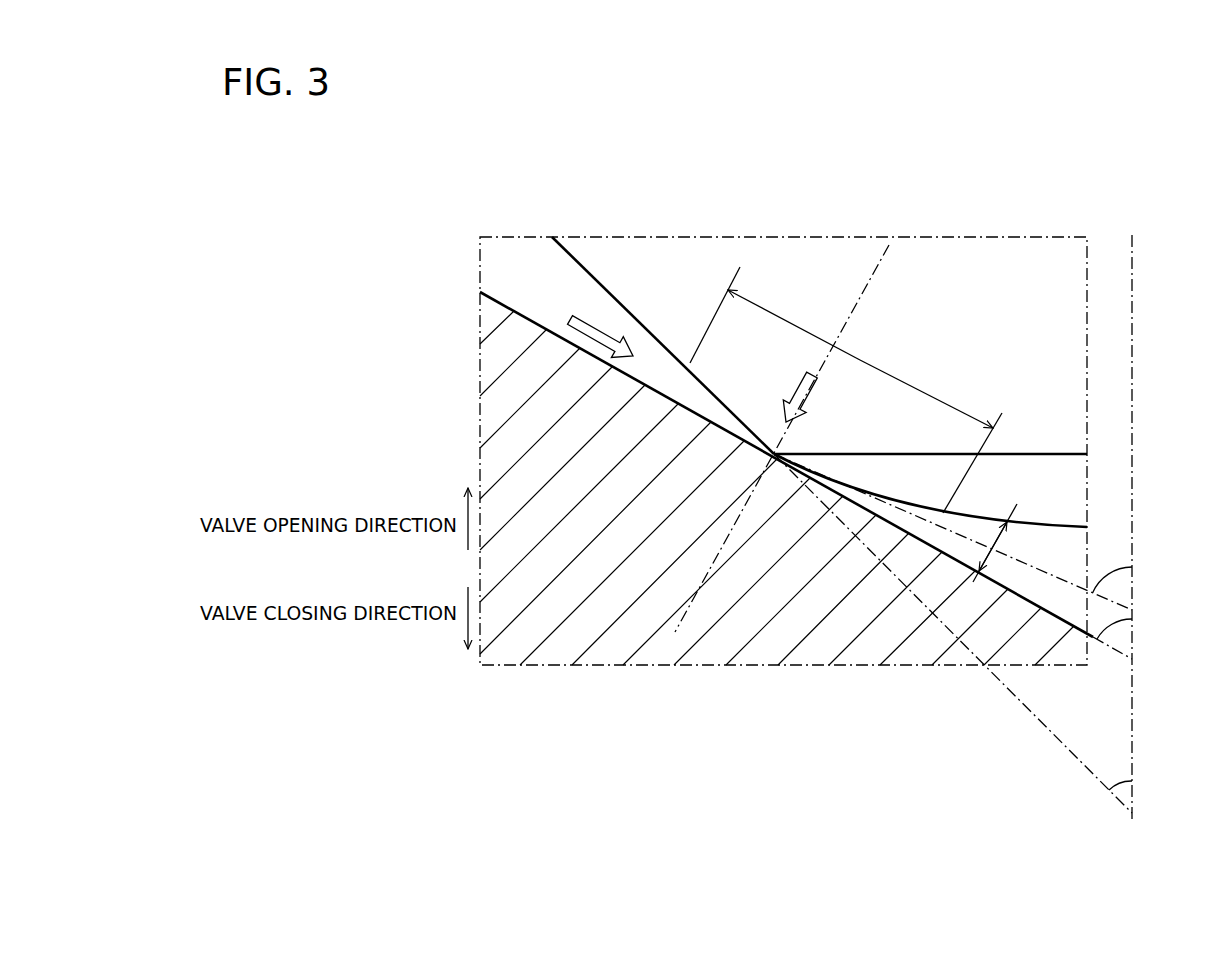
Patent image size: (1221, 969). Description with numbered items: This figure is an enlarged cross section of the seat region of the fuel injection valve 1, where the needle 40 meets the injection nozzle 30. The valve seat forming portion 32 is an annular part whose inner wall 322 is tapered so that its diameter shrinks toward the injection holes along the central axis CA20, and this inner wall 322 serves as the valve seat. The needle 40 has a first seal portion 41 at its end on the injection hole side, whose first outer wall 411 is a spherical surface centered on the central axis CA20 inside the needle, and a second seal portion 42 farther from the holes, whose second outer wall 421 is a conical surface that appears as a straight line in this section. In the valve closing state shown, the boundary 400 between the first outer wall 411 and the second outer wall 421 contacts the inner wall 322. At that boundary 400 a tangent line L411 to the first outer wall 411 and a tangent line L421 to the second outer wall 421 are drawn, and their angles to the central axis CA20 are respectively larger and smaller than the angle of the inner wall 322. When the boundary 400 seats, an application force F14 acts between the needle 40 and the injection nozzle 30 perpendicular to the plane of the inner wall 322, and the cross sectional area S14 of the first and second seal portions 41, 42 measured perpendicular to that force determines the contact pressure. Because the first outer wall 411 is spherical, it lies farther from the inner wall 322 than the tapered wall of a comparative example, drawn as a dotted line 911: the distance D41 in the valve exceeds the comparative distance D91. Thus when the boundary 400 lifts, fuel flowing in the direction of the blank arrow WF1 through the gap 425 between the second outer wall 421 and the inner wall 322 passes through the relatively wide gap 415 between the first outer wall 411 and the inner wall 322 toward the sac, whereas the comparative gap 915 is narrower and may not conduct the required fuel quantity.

The fuel injection valve 1 is at (1086, 236).
The injection nozzle 30 is at (478, 448).
The valve seat forming portion 32 is at (510, 393).
The inner wall 322 is at (522, 300).
The needle 40 is at (828, 236).
The first seal portion 41 is at (1030, 483).
The second seal portion 42 is at (780, 265).
The second outer wall 421 is at (600, 297).
The gap 425 is at (655, 375).
The boundary 400 is at (828, 465).
The first outer wall 411 is at (1057, 527).
The gap 415 is at (1073, 547).
The dotted line 911 is at (917, 523).
The gap 915 is at (933, 537).
The distance D91 is at (990, 592).
The distance D41 is at (1027, 555).
The central axis CA20 is at (1135, 268).
The blank arrow WF1 is at (608, 328).
The application force F14 is at (798, 380).
The cross sectional area S14 is at (880, 365).
The tangent line L411 is at (1093, 590).
The tangent line L421 is at (1087, 767).